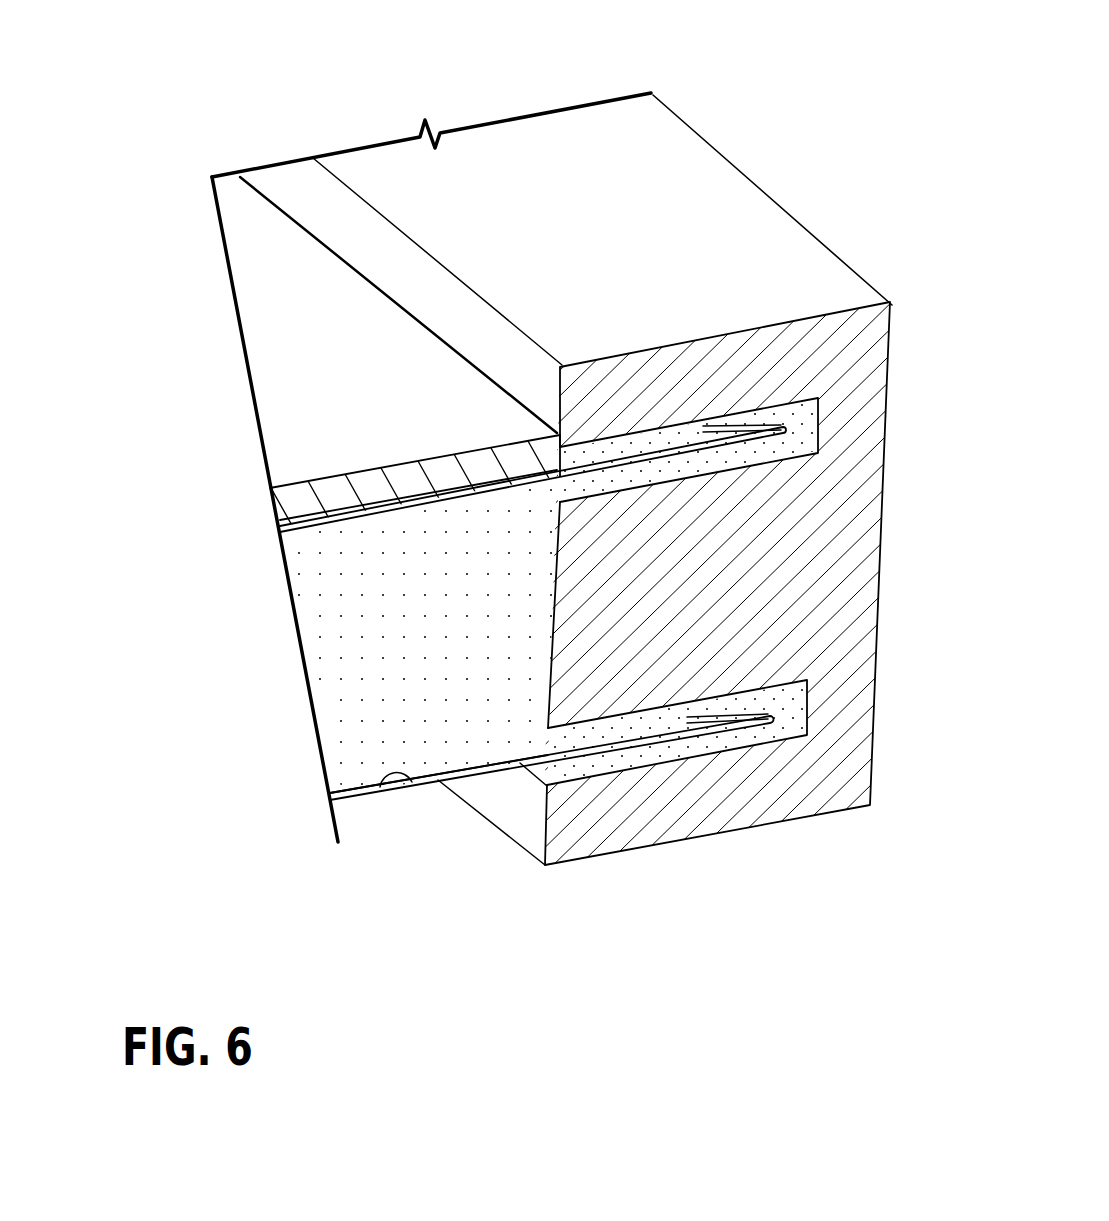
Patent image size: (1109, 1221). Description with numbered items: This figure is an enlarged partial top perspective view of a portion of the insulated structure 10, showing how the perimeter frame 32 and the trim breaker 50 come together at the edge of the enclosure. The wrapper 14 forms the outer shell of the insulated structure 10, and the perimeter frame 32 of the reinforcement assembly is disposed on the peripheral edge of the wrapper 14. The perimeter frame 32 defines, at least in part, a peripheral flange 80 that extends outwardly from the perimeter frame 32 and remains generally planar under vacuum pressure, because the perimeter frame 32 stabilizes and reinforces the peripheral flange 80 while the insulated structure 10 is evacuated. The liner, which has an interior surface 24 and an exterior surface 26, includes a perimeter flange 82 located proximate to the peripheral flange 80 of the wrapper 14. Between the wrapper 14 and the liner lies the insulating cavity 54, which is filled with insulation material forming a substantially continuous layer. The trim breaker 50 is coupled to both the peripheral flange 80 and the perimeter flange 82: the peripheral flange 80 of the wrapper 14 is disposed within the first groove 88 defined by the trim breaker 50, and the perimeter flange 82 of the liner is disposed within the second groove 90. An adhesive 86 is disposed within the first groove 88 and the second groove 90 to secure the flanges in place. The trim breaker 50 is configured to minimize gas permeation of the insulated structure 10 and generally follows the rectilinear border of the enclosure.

The insulated structure 10 is at (160, 204).
The wrapper 14 is at (267, 490).
The interior surface 24 is at (364, 795).
The exterior surface 26 is at (412, 784).
The perimeter frame 32 is at (327, 370).
The trim breaker 50 is at (703, 253).
The insulating cavity 54 is at (382, 725).
The peripheral flange 80 is at (655, 457).
The perimeter flange 82 is at (637, 738).
The adhesive 86 is at (743, 423).
The first groove 88 is at (818, 425).
The second groove 90 is at (810, 718).